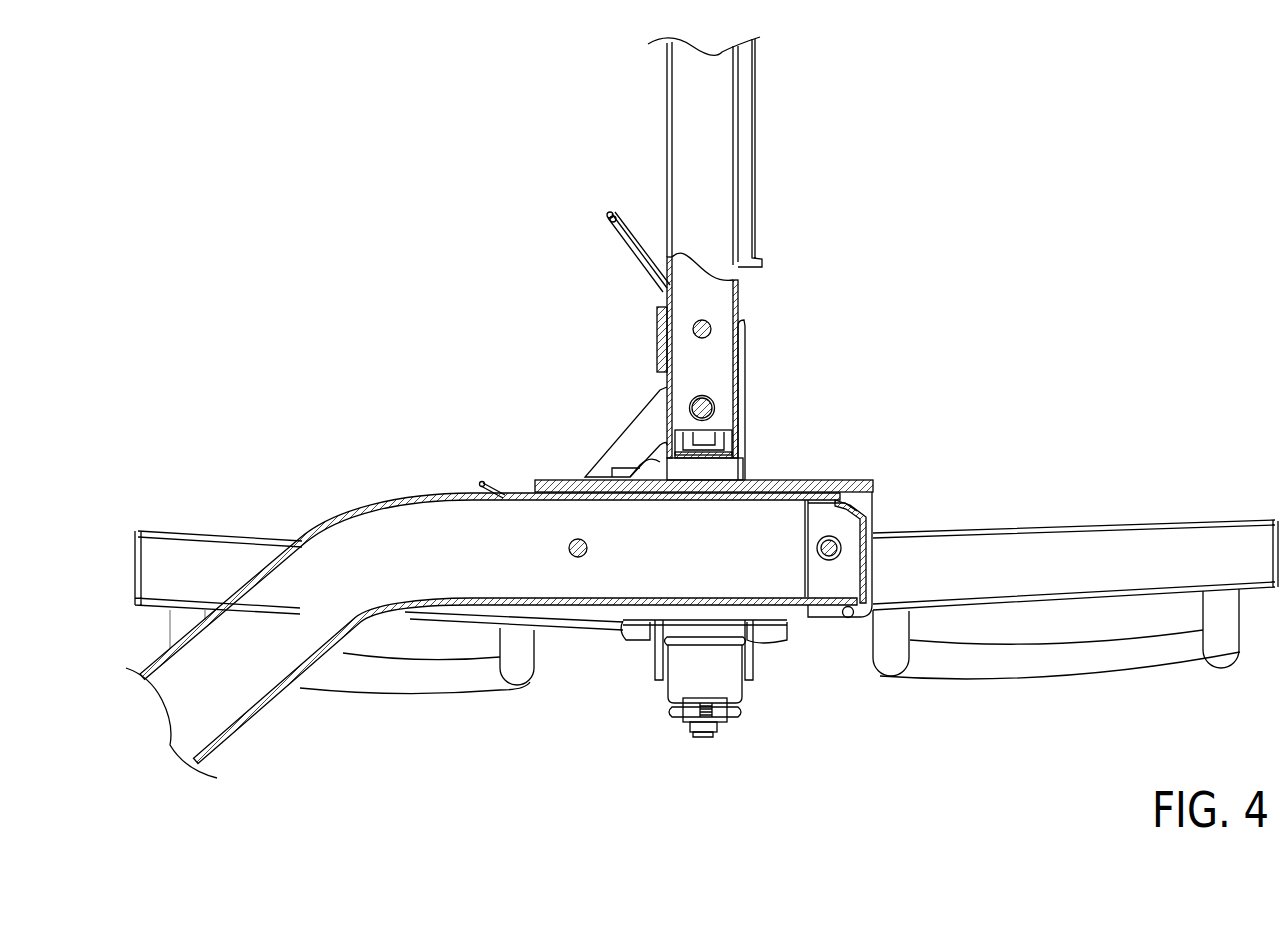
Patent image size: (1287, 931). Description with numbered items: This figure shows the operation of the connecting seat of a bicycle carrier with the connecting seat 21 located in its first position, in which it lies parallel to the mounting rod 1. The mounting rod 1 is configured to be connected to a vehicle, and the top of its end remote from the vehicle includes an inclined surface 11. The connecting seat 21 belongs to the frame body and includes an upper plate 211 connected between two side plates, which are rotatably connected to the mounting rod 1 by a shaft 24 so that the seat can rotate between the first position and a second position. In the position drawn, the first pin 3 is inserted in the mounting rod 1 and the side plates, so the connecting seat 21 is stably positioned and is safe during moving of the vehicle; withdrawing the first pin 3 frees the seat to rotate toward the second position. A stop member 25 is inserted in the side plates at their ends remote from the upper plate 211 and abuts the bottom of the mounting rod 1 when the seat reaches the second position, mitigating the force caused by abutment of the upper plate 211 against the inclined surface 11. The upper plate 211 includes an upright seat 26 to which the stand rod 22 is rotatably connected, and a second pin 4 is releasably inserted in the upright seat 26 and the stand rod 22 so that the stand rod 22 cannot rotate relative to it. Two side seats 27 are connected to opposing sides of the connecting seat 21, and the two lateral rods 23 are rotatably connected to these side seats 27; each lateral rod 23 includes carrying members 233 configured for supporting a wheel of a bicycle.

The mounting rod 1 is at (432, 492).
The first pin 3 is at (578, 540).
The second pin 4 is at (708, 322).
The inclined surface 11 is at (873, 501).
The connecting seat 21 is at (925, 518).
The stand rod 22 is at (712, 137).
The lateral rod 23 is at (685, 677).
The shaft 24 is at (826, 560).
The stop member 25 is at (849, 618).
The upright seat 26 is at (743, 365).
The side seat 27 is at (630, 658).
The upper plate 211 is at (847, 487).
The carrying member 233 is at (1008, 660).